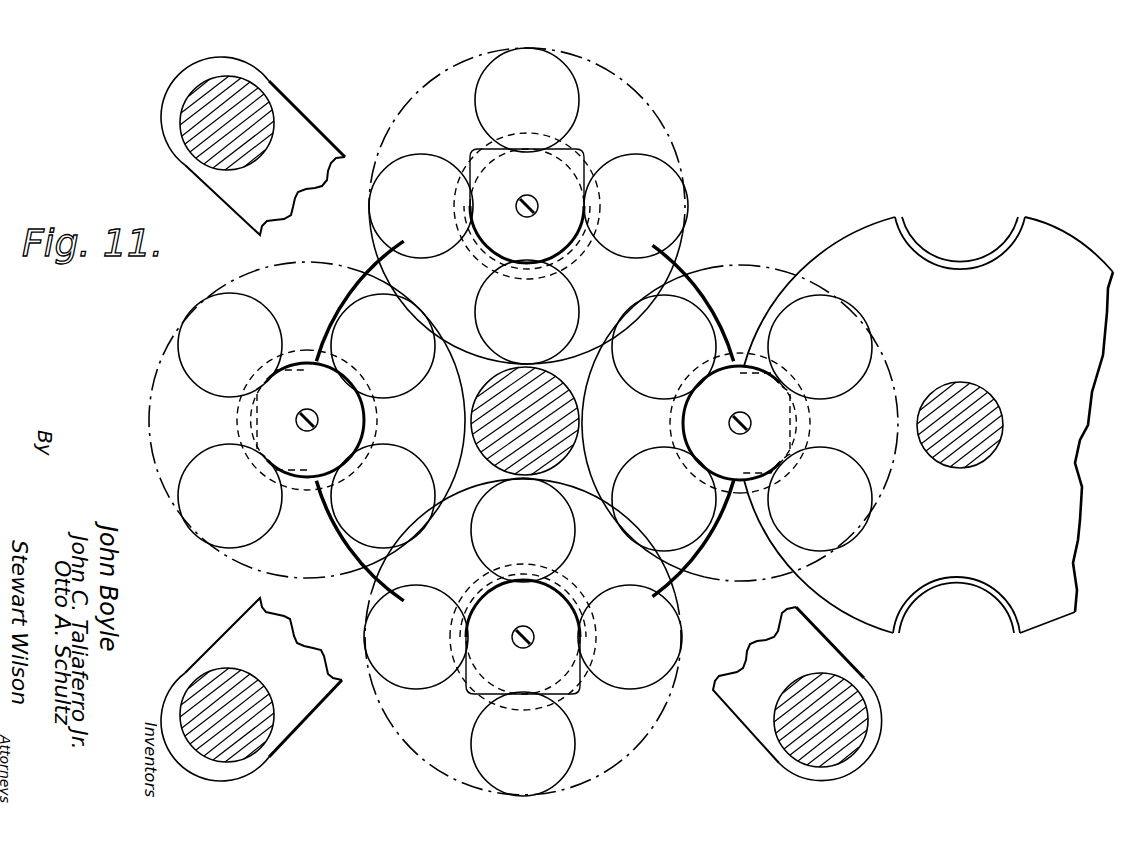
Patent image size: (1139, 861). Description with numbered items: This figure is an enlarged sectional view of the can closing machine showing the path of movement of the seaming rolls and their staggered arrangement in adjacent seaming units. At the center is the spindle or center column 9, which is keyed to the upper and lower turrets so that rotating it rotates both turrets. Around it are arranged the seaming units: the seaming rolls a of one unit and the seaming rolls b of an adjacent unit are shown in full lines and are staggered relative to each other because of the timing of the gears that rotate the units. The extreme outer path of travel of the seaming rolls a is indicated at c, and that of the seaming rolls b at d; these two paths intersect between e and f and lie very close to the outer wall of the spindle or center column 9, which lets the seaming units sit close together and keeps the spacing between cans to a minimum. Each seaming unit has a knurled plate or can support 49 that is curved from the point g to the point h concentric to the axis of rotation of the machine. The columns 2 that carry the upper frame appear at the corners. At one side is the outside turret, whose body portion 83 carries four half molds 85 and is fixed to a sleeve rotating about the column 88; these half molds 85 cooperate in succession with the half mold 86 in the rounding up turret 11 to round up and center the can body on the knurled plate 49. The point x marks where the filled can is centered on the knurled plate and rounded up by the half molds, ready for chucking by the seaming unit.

The columns 2 is at (238, 93).
The spindle or center column 9 is at (557, 416).
The rounding up turret 11 is at (678, 288).
The knurled plates or can supports 49 is at (560, 167).
The body portion of the outside turret 83 is at (928, 425).
The half molds 85 is at (950, 265).
The half mold 86 is at (498, 255).
The column 88 is at (940, 408).
The seaming rolls a is at (478, 114).
The seaming rolls b is at (246, 306).
The extreme outer path of travel of the seaming rolls a c is at (426, 91).
The extreme outer path of travel of the seaming rolls b d is at (317, 263).
The intersection point of paths e is at (385, 284).
The intersection point of paths f is at (448, 353).
The point on knurled plate g is at (467, 684).
The point on knurled plate h is at (580, 688).
The point X x is at (740, 434).